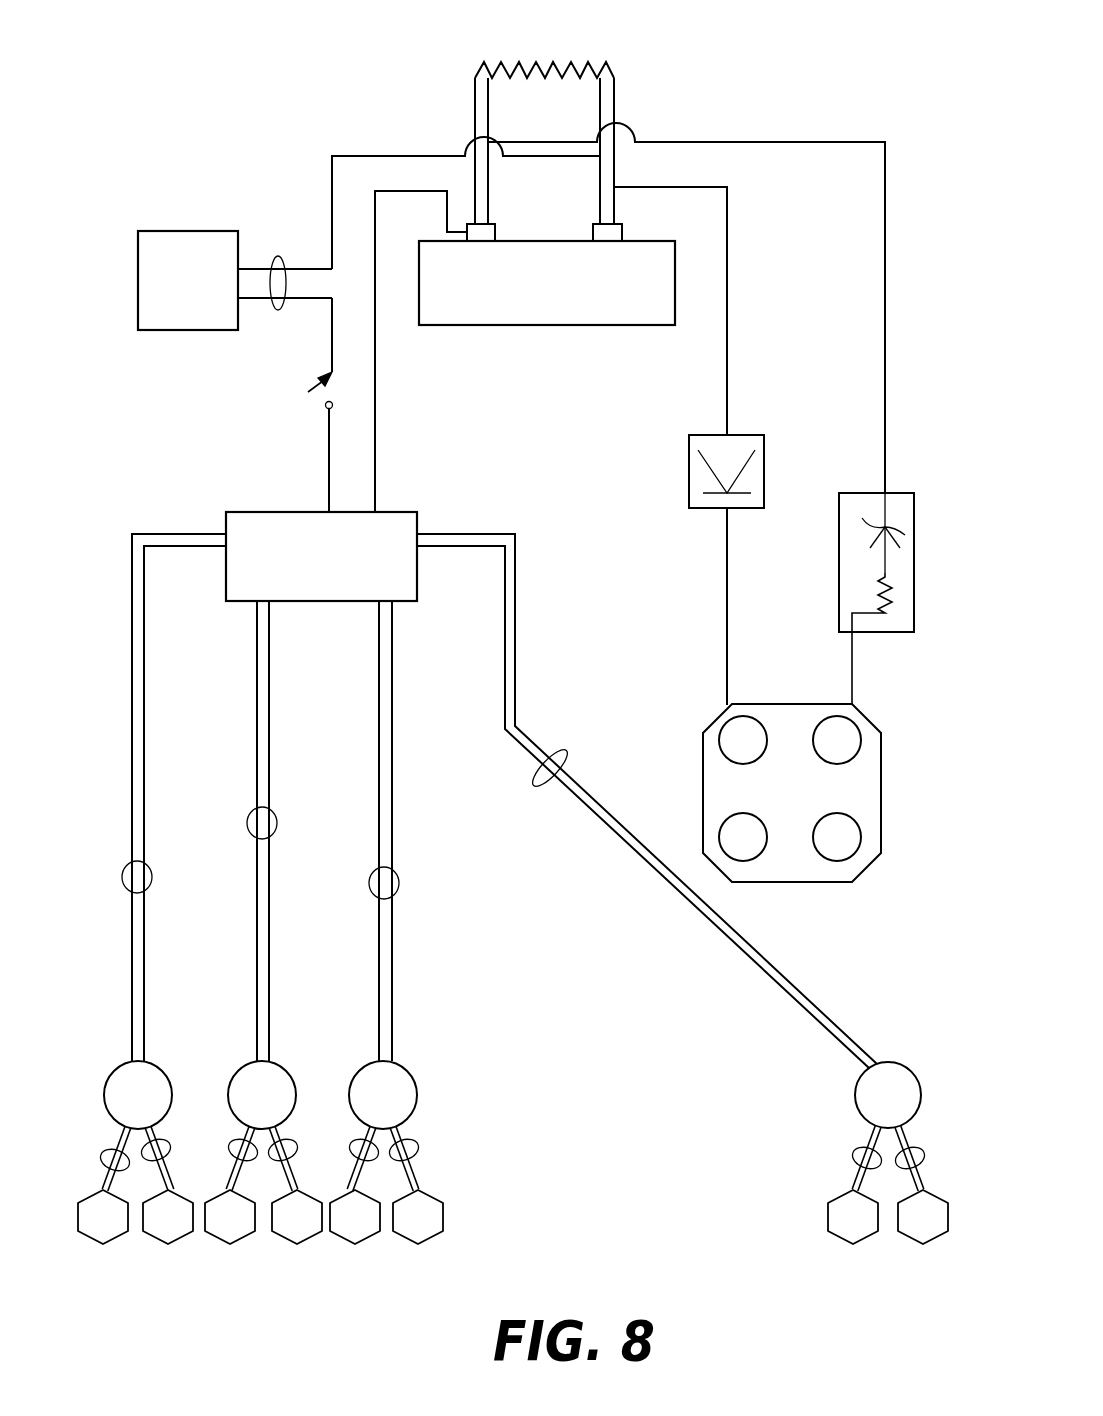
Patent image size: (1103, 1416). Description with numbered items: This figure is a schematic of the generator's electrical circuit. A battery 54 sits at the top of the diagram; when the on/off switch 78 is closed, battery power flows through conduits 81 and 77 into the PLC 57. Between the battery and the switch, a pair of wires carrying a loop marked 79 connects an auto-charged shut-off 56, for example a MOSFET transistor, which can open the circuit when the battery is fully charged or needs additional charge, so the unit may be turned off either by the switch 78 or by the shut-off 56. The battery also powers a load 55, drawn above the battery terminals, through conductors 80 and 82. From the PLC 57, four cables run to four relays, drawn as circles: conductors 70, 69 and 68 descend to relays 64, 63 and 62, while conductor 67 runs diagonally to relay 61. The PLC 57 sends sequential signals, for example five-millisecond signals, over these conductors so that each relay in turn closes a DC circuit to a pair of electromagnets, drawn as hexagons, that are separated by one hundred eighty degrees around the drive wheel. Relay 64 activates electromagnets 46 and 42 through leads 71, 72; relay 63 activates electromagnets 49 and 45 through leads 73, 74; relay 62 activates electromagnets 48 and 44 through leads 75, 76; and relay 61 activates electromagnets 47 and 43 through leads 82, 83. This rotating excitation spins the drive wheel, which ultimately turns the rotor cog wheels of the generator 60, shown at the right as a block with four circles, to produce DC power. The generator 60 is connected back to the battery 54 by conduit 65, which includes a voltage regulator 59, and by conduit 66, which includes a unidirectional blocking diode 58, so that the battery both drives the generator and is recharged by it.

The electromagnet 42 is at (160, 1238).
The electromagnet 43 is at (931, 1238).
The electromagnet 44 is at (410, 1238).
The electromagnet 45 is at (289, 1238).
The electromagnet 46 is at (95, 1238).
The electromagnet 47 is at (845, 1238).
The electromagnet 48 is at (347, 1238).
The electromagnet 49 is at (222, 1238).
The battery 54 is at (510, 325).
The load 55 is at (597, 67).
The auto-charged shut-off 56 is at (178, 318).
The PLC 57 is at (403, 512).
The unidirectional blocking diode 58 is at (764, 465).
The voltage regulator 59 is at (914, 502).
The generator 60 is at (881, 757).
The relay 61 is at (921, 1090).
The relay 62 is at (410, 1080).
The relay 63 is at (289, 1080).
The relay 64 is at (165, 1080).
The conduit 65 is at (887, 292).
The conduit 66 is at (729, 345).
The conductor 67 is at (560, 760).
The conductor 68 is at (399, 883).
The conductor 69 is at (278, 823).
The conductor 70 is at (152, 877).
The conduit 71 is at (103, 1152).
The conduit 72 is at (168, 1140).
The conduit 73 is at (232, 1147).
The conduit 74 is at (295, 1140).
The conduit 75 is at (353, 1147).
The conduit 76 is at (416, 1140).
The conduit 77 is at (376, 348).
The on/off switch 78 is at (318, 392).
The wire pair 79 is at (280, 312).
The conductor 80 is at (486, 125).
The conduit 81 is at (347, 150).
The conductor 82 is at (613, 112).
The conduit 83 is at (924, 1158).